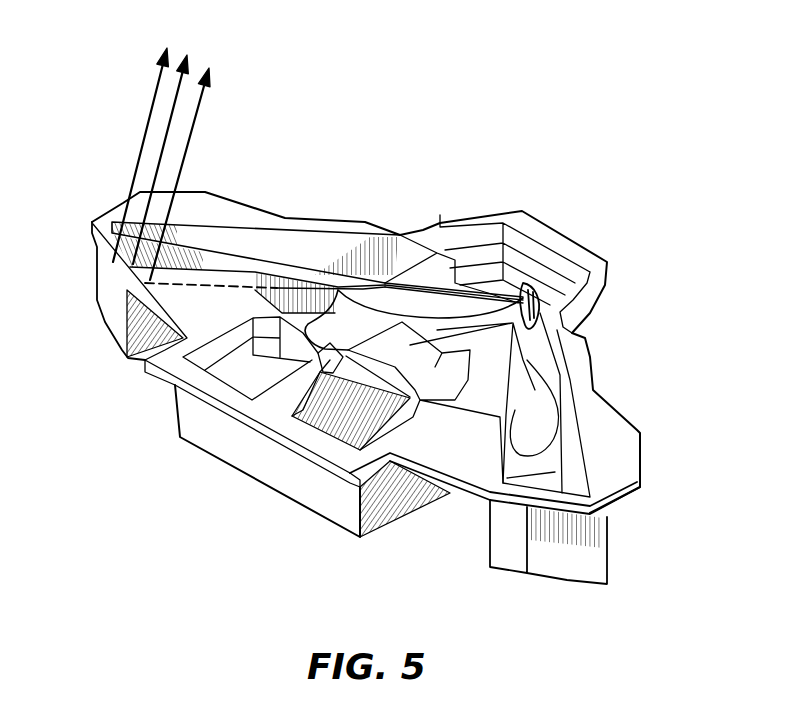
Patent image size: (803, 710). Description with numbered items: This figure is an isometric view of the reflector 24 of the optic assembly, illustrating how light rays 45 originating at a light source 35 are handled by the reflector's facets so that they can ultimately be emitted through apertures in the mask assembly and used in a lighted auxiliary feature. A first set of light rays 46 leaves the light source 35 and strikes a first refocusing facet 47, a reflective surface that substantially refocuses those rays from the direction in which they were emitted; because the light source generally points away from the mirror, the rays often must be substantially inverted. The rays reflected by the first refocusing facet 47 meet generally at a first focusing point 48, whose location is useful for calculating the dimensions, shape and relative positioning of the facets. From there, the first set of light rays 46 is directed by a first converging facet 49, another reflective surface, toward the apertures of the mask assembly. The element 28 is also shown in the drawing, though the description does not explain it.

The reflector 24 is at (567, 558).
The housing 28 is at (317, 210).
The light source 35 is at (523, 283).
The light rays 45 is at (130, 123).
The first set of light rays 46 is at (545, 295).
The first refocusing facet 47 is at (590, 343).
The first focusing point 48 is at (392, 323).
The first converging facet 49 is at (132, 266).